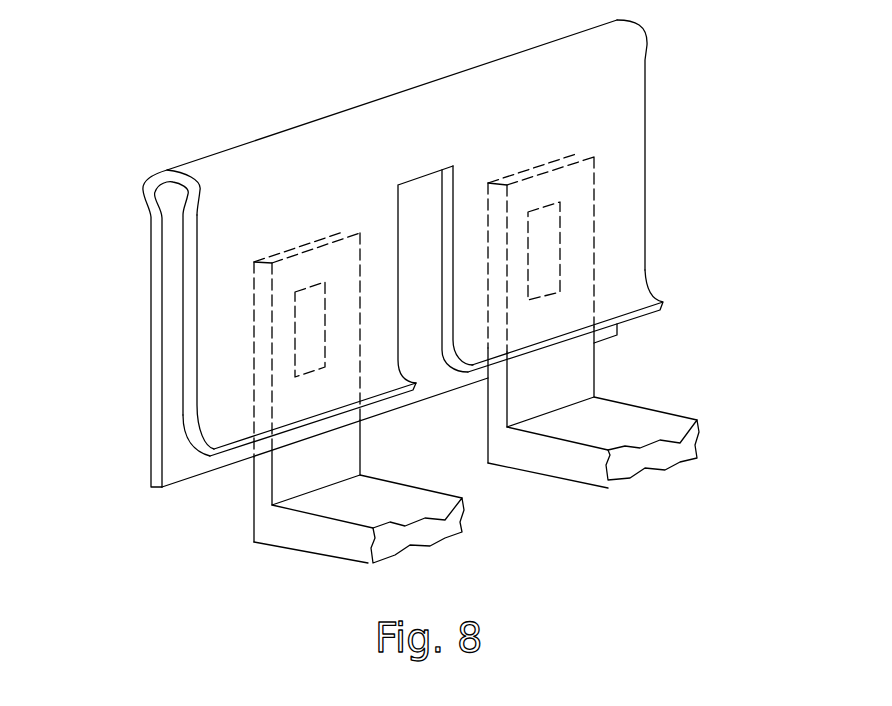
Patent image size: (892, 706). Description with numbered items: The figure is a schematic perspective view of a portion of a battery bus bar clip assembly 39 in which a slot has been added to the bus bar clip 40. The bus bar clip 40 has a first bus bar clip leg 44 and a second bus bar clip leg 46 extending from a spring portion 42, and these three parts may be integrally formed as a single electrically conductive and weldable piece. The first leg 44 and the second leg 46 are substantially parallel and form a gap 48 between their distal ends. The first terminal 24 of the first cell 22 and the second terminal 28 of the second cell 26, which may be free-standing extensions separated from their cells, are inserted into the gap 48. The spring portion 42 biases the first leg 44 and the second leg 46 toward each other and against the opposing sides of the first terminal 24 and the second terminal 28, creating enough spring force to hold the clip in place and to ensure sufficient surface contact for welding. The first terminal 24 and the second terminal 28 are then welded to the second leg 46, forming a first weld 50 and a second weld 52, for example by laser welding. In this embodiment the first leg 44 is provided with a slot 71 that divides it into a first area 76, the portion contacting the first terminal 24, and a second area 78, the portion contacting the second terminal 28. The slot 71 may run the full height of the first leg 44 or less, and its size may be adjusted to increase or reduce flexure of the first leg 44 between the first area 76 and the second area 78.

The battery bus bar clip assembly 39 is at (439, 277).
The bus bar clip 40 is at (222, 112).
The spring portion 42 is at (363, 125).
The first bus bar clip leg 44 is at (573, 133).
The second bus bar clip leg 46 is at (168, 320).
The gap 48 is at (187, 460).
The first weld 50 is at (307, 343).
The second weld 52 is at (550, 270).
The slot 71 is at (418, 313).
The first area 76 is at (227, 310).
The second area 78 is at (620, 217).
The first cell 22 is at (380, 510).
The first terminal 24 is at (324, 413).
The second cell 26 is at (631, 344).
The second terminal 28 is at (563, 382).